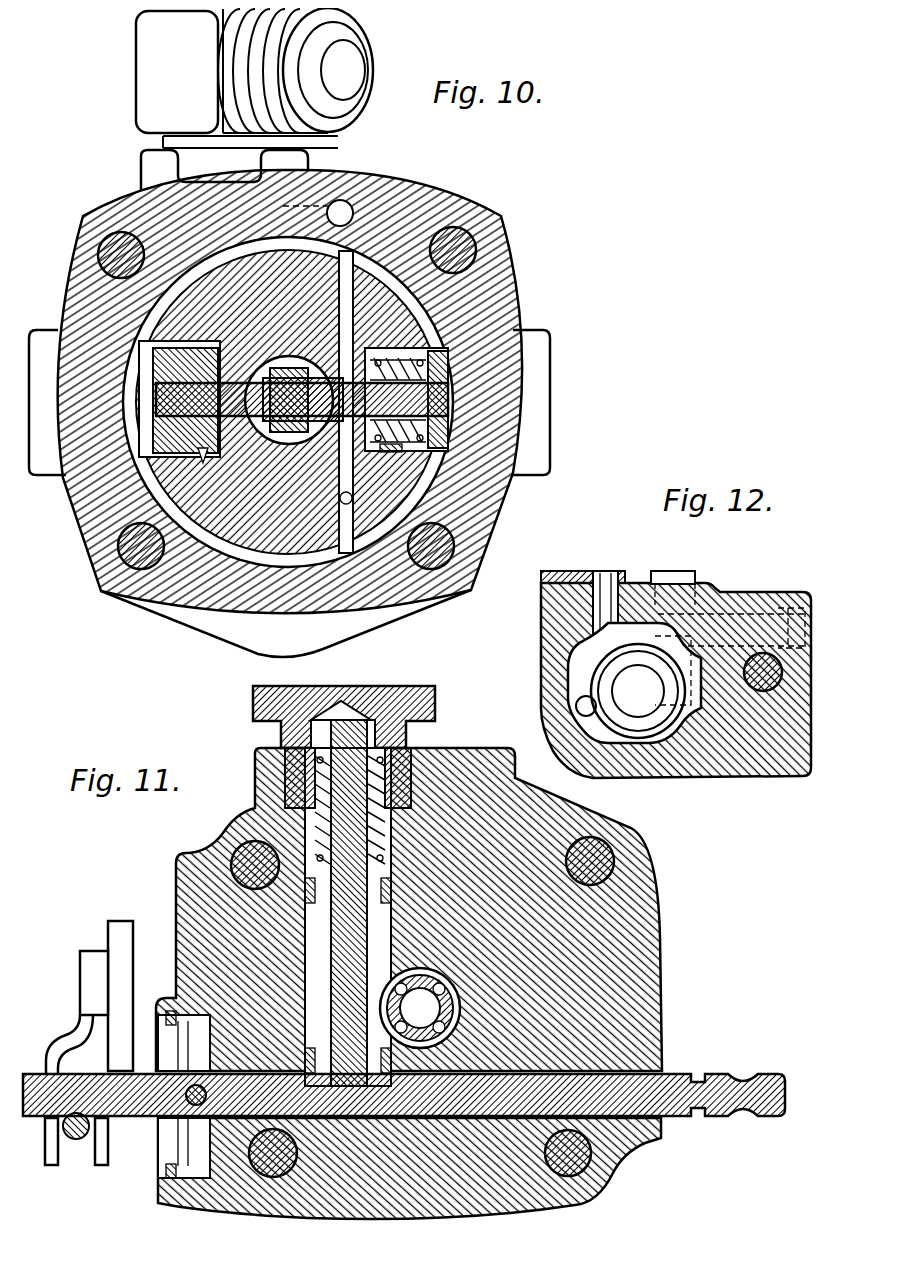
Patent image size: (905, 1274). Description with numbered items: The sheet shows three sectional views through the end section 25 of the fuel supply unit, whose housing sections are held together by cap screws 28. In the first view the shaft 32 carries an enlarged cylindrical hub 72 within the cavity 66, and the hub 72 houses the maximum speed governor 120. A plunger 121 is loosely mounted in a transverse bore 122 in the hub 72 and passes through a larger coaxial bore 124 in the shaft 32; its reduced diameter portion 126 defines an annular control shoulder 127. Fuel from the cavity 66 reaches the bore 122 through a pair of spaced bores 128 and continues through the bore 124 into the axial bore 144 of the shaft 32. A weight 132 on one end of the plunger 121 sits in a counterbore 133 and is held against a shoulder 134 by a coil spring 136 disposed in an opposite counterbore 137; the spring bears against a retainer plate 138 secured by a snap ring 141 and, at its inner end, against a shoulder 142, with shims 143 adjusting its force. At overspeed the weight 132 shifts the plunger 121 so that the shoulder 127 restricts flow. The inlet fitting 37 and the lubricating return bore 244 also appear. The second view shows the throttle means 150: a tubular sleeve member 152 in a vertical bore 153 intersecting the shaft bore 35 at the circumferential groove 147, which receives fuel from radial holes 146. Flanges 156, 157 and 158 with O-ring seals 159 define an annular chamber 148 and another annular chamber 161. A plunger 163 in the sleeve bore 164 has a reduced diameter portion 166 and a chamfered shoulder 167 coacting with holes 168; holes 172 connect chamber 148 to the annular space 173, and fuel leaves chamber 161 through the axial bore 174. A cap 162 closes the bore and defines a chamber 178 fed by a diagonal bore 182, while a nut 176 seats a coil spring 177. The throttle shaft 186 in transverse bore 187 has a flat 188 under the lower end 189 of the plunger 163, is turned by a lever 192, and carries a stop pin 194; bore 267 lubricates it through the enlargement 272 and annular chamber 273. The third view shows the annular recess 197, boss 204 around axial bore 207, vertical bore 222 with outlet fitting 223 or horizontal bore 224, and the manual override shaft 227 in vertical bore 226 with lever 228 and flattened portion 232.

In FIG. 10, the end section 25 is at (513, 262).
In FIG. 12, the end section 25 is at (750, 762).
In FIG. 11, the end section 25 is at (651, 902).
In FIG. 10, the cap screws 28 is at (100, 237).
In FIG. 12, the cap screws 28 is at (755, 675).
In FIG. 11, the cap screws 28 is at (233, 830).
In FIG. 10, the inlet fitting 37 is at (128, 60).
In FIG. 10, the axially extending bore 244 is at (347, 200).
In FIG. 10, the cavity 66 is at (137, 468).
In FIG. 10, the hub 72 is at (288, 402).
In FIG. 10, the maximum speed governor 120 is at (328, 335).
In FIG. 10, the plunger 121 is at (302, 399).
In FIG. 10, the weight 132 is at (168, 338).
In FIG. 10, the shoulder 134 is at (205, 340).
In FIG. 10, the bore 124 is at (284, 383).
In FIG. 10, the reduced diameter portion 126 is at (310, 350).
In FIG. 10, the annular control shoulder 127 is at (360, 340).
In FIG. 10, the shoulder 142 is at (372, 352).
In FIG. 10, the coil spring 136 is at (388, 436).
In FIG. 10, the shims 143 is at (384, 466).
In FIG. 10, the counterbore 137 is at (402, 338).
In FIG. 10, the retainer plate 138 is at (436, 350).
In FIG. 10, the snap ring 141 is at (440, 384).
In FIG. 10, the counterbore 133 is at (195, 455).
In FIG. 10, the shaft 32 is at (260, 464).
In FIG. 11, the shaft 32 is at (445, 975).
In FIG. 10, the bore 122 is at (310, 462).
In FIG. 10, the bores 128 is at (332, 490).
In FIG. 12, the operating lever 228 is at (563, 562).
In FIG. 12, the shaft 227 is at (613, 607).
In FIG. 12, the outlet fitting 223 is at (673, 562).
In FIG. 12, the horizontal bore 224 is at (723, 605).
In FIG. 12, the vertical bore 226 is at (590, 602).
In FIG. 12, the flattened portion 232 is at (590, 630).
In FIG. 12, the annular recess 197 is at (560, 655).
In FIG. 12, the axial bore 174 is at (560, 697).
In FIG. 11, the axial bore 174 is at (378, 880).
In FIG. 12, the vertical bore 222 is at (653, 628).
In FIG. 12, the axial bore 207 is at (638, 658).
In FIG. 12, the annular boss 204 is at (632, 716).
In FIG. 11, the chamber 178 is at (307, 712).
In FIG. 11, the nut 176 is at (368, 725).
In FIG. 11, the cap 162 is at (245, 691).
In FIG. 11, the throttle means 150 is at (422, 828).
In FIG. 11, the coil spring 177 is at (265, 772).
In FIG. 11, the diagonal bore 182 is at (300, 816).
In FIG. 11, the plunger 163 is at (346, 903).
In FIG. 11, the O-ring seals 159 is at (372, 868).
In FIG. 11, the holes 168 is at (372, 900).
In FIG. 11, the tubular sleeve member 152 is at (385, 930).
In FIG. 11, the annular flange 158 is at (307, 878).
In FIG. 11, the annular chamber 161 is at (297, 905).
In FIG. 11, the vertical bore 153 is at (297, 912).
In FIG. 11, the annular flange 157 is at (297, 938).
In FIG. 11, the axial bore 144 is at (425, 965).
In FIG. 11, the bore 35 is at (432, 985).
In FIG. 11, the radial holes 146 is at (450, 997).
In FIG. 11, the circumferential groove 147 is at (438, 1034).
In FIG. 11, the chamfered shoulder 167 is at (300, 1000).
In FIG. 11, the reduced diameter portion 166 is at (302, 1020).
In FIG. 11, the annular space 173 is at (300, 1043).
In FIG. 11, the annular chamber 148 is at (300, 1057).
In FIG. 11, the holes 172 is at (300, 1060).
In FIG. 11, the bore 164 is at (300, 1073).
In FIG. 11, the annular flange 156 is at (300, 1080).
In FIG. 11, the lever 192 is at (100, 924).
In FIG. 11, the stop pin 194 is at (178, 1087).
In FIG. 11, the lower end 189 is at (327, 1080).
In FIG. 11, the flat 188 is at (350, 1090).
In FIG. 11, the transverse bore 187 is at (573, 1066).
In FIG. 11, the throttle shaft 186 is at (765, 1066).
In FIG. 11, the enlargement 272 is at (468, 1110).
In FIG. 11, the coaxial bore 267 is at (468, 1113).
In FIG. 11, the annular chamber 273 is at (478, 1112).